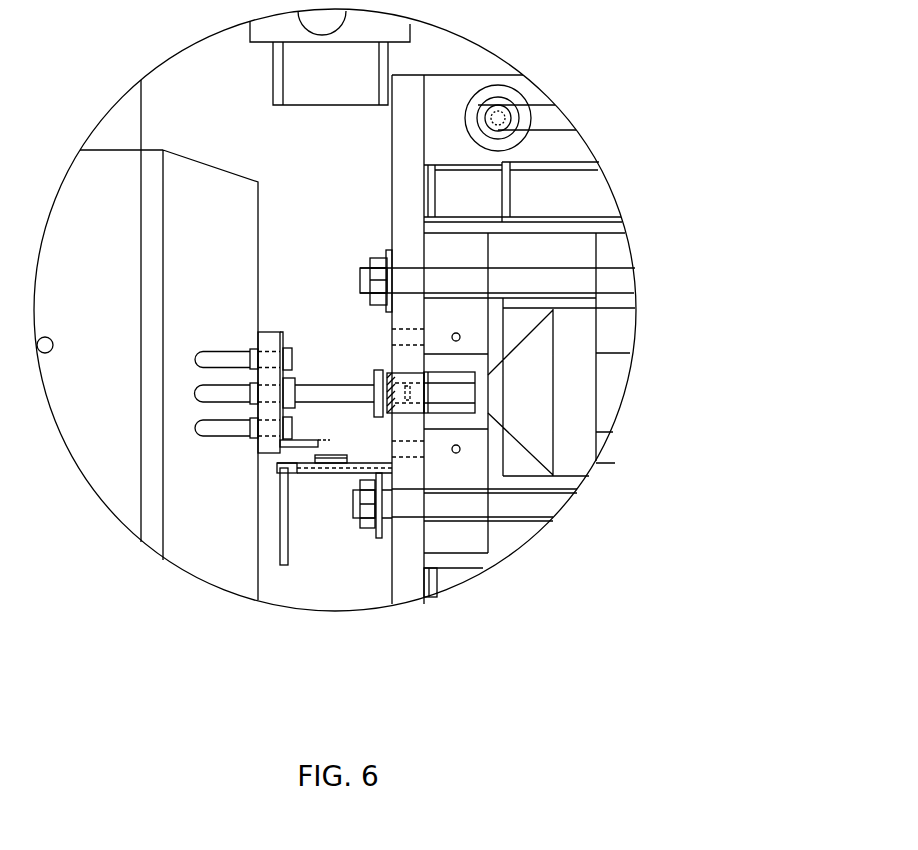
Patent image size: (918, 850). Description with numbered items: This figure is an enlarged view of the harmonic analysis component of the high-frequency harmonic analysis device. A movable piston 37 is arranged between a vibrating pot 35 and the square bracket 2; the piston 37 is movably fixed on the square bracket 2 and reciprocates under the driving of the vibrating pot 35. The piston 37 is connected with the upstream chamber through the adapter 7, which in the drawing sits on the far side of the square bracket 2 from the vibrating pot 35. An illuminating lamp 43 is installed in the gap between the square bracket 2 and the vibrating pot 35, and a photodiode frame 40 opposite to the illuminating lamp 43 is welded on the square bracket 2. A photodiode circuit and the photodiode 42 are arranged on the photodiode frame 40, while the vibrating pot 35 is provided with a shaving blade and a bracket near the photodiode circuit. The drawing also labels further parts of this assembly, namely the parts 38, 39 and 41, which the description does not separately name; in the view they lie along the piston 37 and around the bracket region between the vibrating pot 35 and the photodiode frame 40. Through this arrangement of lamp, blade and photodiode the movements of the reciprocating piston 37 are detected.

The square bracket 2 is at (427, 93).
The adapter 7 is at (441, 397).
The vibrating pot 35 is at (160, 195).
The movable piston 37 is at (323, 377).
The washer 38 is at (375, 365).
The support strip 39 is at (288, 449).
The photodiode frame 40 is at (344, 478).
The hanging bar 41 is at (275, 478).
The photodiode 42 is at (328, 468).
The illuminating lamp 43 is at (268, 68).